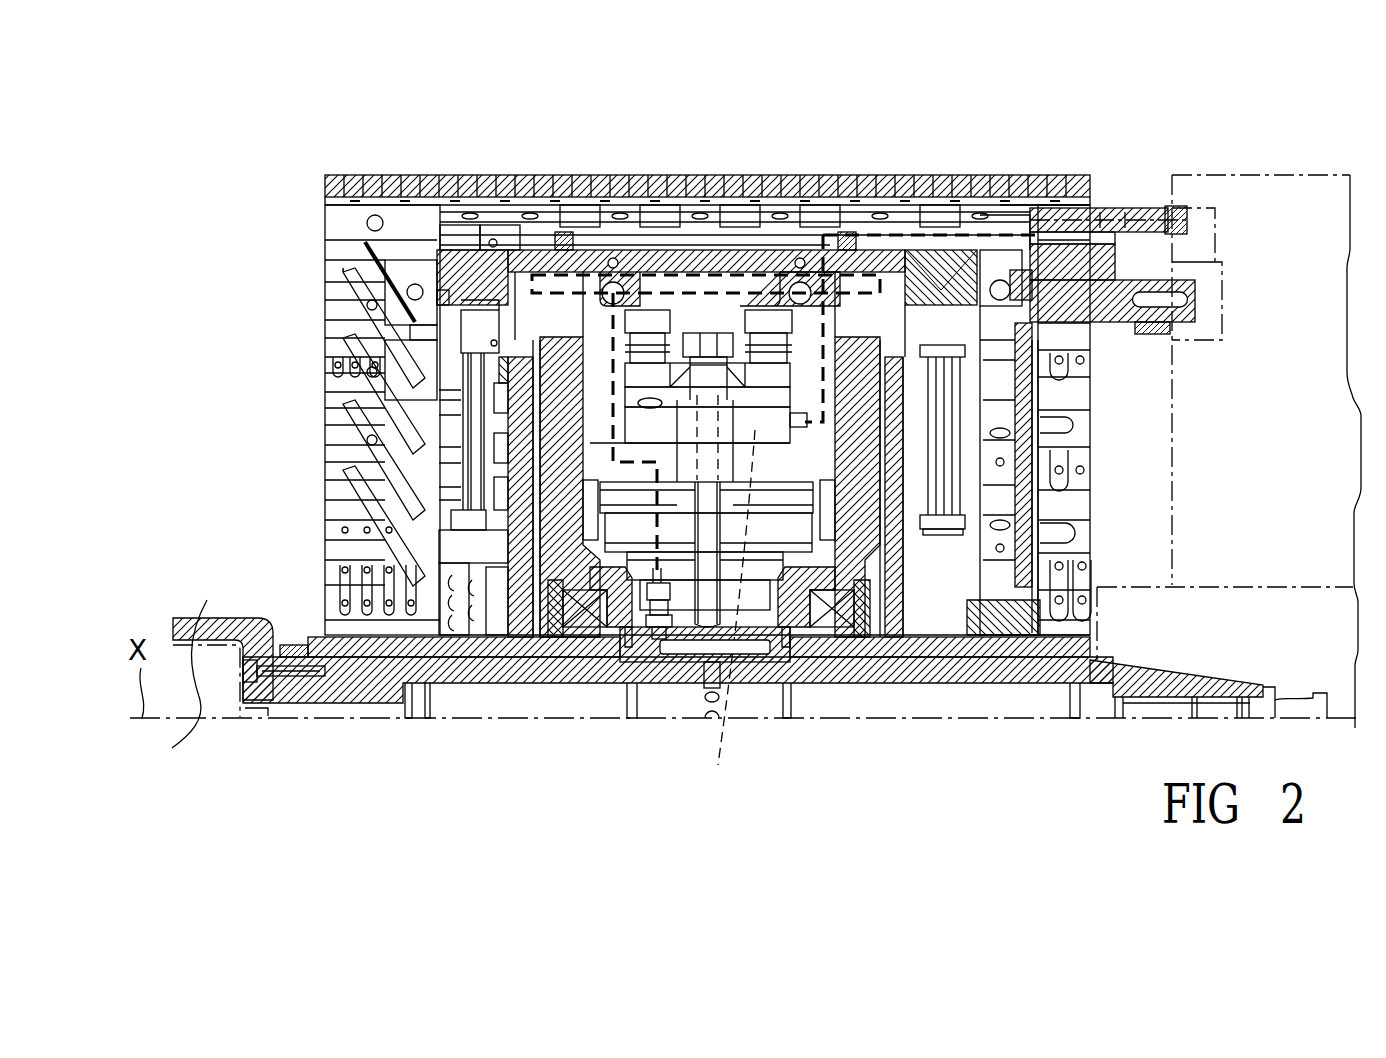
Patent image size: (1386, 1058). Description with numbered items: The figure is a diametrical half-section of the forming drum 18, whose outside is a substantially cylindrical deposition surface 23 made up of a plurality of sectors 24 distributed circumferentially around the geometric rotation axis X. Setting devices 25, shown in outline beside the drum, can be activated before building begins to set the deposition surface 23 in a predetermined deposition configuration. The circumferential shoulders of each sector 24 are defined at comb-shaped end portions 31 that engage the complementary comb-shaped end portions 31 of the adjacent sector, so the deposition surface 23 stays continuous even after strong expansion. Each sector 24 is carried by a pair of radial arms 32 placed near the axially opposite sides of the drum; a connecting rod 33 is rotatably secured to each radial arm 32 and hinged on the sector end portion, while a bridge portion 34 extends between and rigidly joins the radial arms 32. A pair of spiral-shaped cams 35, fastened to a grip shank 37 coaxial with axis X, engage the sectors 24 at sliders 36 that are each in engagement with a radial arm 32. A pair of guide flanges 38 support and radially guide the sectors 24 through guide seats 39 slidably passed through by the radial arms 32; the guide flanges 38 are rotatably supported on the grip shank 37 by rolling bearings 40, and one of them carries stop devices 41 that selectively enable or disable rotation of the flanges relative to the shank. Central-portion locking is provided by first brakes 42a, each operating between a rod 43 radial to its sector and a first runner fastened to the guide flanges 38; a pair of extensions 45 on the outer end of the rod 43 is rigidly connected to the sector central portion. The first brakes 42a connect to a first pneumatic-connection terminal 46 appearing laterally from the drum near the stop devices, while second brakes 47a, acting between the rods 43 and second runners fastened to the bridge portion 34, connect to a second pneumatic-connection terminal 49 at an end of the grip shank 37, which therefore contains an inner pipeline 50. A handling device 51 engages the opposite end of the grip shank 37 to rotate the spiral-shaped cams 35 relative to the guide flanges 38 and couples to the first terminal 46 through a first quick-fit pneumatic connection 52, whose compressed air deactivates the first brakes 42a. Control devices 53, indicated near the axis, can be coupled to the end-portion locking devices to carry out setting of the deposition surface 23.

The forming drum 18 is at (1060, 167).
The deposition surface 23 is at (478, 175).
The sectors 24 is at (325, 208).
The setting devices 25 is at (1128, 433).
The comb-shaped end portions 31 is at (568, 215).
The radial arms 32 is at (470, 450).
The connecting rod 33 is at (392, 250).
The bridge portion 34 is at (713, 250).
The spiral-shaped cams 35 is at (480, 657).
The sliders 36 is at (955, 657).
The grip shank 37 is at (1040, 672).
The guide flanges 38 is at (565, 480).
The guide seats 39 is at (481, 320).
The rolling bearings 40 is at (590, 632).
The stop devices 41 is at (1008, 258).
The first brakes 42a is at (726, 596).
The rod 43 is at (703, 600).
The extensions 45 is at (648, 345).
The first pneumatic-connection terminal 46 is at (1168, 206).
The second brakes 47a is at (565, 232).
The second pneumatic-connection terminal 49 is at (212, 618).
The inner pipeline 50 is at (757, 703).
The handling device 51 is at (1275, 172).
The first quick-fit pneumatic connection 52 is at (1200, 215).
The control devices 53 is at (265, 712).